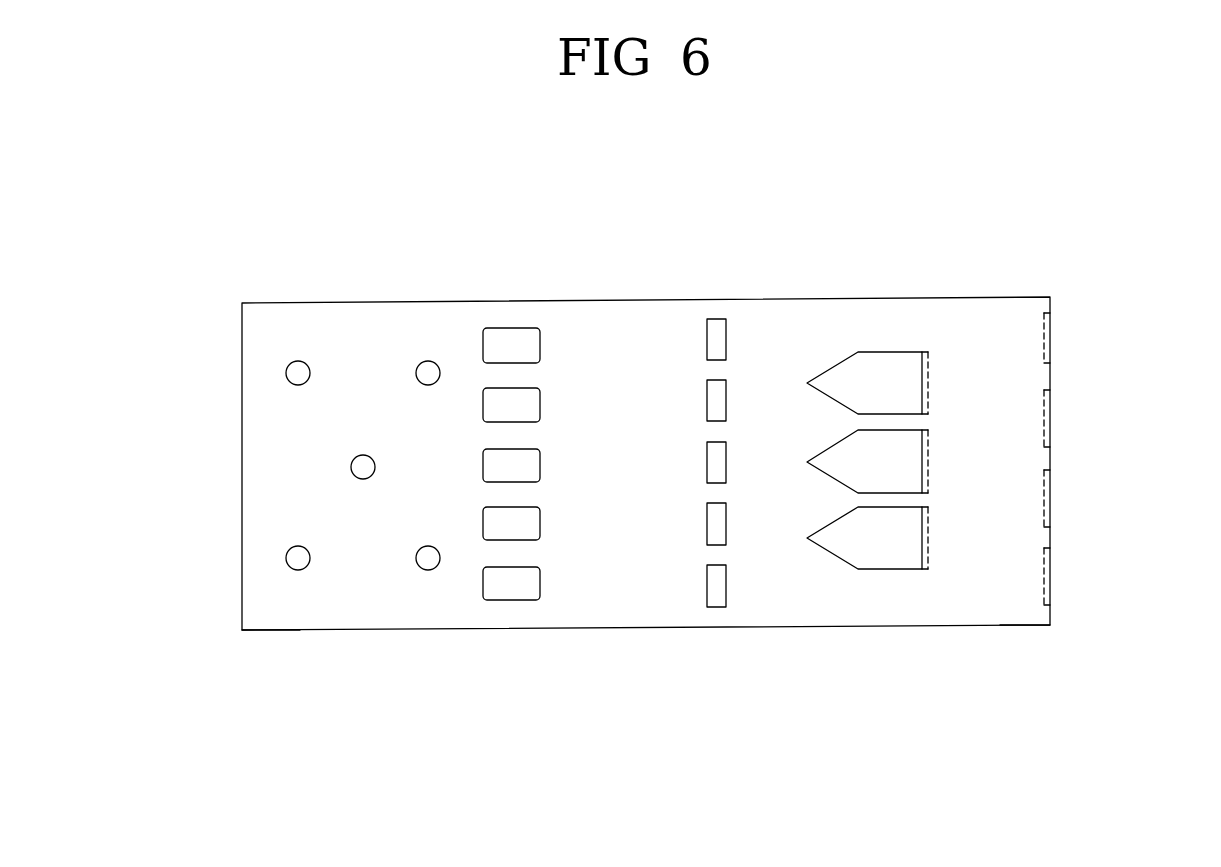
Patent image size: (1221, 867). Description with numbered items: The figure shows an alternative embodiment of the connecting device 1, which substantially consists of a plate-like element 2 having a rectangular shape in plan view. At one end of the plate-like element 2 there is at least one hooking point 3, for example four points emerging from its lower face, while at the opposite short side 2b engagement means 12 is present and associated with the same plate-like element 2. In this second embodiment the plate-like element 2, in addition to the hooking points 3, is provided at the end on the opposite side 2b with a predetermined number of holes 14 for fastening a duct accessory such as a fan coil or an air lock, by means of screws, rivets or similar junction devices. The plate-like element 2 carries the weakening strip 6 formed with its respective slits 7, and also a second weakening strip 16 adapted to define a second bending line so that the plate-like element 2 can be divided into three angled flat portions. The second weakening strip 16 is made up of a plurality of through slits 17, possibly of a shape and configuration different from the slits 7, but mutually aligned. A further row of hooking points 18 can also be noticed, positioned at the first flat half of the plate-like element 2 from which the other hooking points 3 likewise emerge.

The connecting device 1 is at (183, 333).
The plate-like element 2 is at (650, 320).
The short side 2b is at (268, 630).
The hooking points 3 is at (1045, 407).
The weakening strip 6 is at (722, 317).
The slits 7 is at (718, 405).
The engagement means 12 is at (388, 376).
The holes 14 is at (364, 456).
The second weakening strip 16 is at (513, 312).
The through slits 17 is at (528, 407).
The further row of hooking points 18 is at (918, 370).